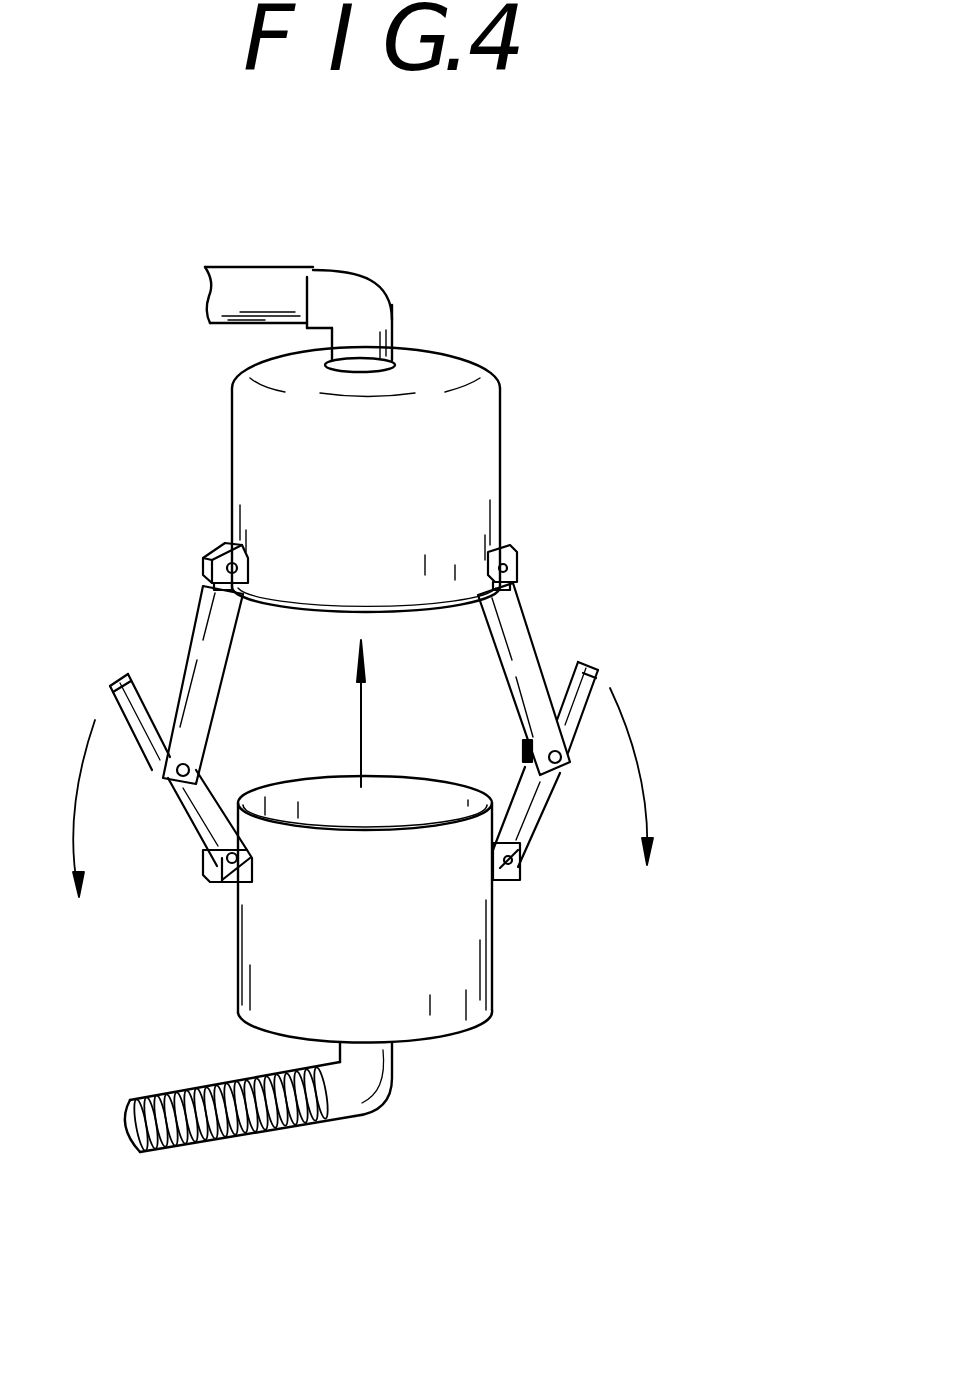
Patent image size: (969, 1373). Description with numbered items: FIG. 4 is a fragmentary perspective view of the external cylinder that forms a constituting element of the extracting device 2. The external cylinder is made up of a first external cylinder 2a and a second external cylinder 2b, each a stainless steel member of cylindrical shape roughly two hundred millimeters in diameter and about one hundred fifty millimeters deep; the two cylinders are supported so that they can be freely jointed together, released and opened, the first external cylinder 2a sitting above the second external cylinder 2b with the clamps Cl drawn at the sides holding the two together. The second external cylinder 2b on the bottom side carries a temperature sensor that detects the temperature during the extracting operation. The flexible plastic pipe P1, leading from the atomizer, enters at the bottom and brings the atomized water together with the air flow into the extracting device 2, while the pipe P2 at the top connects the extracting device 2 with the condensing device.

The extracting device 2 is at (624, 388).
The first external cylinder 2a is at (238, 428).
The second external cylinder 2b is at (493, 995).
The clamp Cl is at (525, 648).
The plastic pipe P1 is at (213, 1143).
The pipe P2 is at (262, 275).